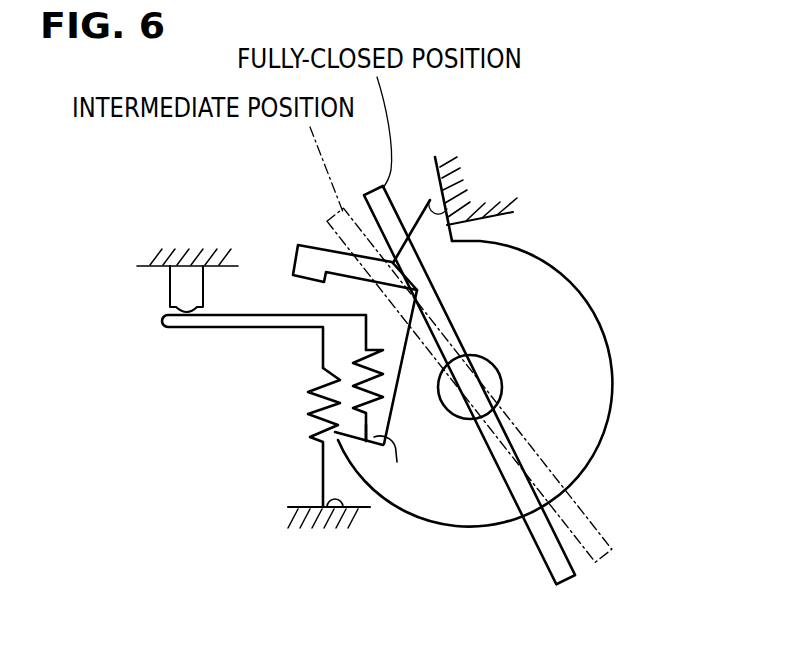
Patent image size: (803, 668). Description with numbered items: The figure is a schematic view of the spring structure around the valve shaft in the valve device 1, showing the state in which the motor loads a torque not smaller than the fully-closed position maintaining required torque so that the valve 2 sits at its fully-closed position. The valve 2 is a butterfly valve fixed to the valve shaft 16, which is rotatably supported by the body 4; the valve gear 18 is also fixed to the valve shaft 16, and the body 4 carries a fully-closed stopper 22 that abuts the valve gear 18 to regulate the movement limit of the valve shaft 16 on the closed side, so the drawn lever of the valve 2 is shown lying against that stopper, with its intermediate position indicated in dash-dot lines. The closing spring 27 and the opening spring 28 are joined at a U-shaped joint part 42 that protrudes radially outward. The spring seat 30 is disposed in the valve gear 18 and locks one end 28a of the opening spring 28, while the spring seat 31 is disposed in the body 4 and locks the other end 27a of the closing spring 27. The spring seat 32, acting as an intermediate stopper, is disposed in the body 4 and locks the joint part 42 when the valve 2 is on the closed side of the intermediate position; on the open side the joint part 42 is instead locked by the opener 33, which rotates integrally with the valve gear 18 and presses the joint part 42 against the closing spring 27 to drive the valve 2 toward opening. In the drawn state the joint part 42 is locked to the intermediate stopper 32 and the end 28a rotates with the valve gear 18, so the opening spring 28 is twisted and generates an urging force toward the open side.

The valve device 1 is at (695, 112).
The valve 2 is at (566, 578).
The body 4 is at (502, 187).
The valve shaft 16 is at (497, 374).
The valve gear 18 is at (597, 384).
The fully-closed stopper 22 is at (430, 200).
The closing spring 27 is at (312, 408).
The other end of the closing spring 27a is at (322, 504).
The opening spring 28 is at (365, 366).
The one end of the opening spring 28a is at (368, 440).
The spring seat 30 is at (397, 462).
The spring seat 31 is at (337, 510).
The spring seat (intermediate stopper) 32 is at (178, 290).
The opener 33 is at (304, 254).
The joint part 42 is at (168, 327).